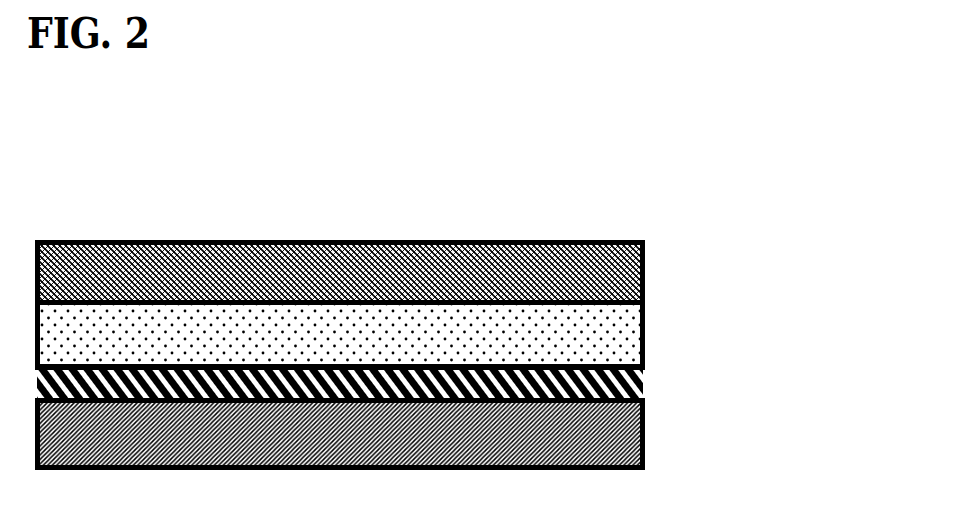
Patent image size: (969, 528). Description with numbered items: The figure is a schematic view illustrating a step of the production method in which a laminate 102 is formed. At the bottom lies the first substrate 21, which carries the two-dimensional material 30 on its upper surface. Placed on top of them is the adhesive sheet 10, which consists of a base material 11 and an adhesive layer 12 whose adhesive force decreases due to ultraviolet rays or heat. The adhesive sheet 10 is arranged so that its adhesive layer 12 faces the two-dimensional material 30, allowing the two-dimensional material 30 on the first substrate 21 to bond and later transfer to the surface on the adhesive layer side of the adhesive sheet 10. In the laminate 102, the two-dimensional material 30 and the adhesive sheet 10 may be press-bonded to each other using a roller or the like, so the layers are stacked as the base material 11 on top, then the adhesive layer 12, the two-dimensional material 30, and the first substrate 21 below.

The laminate 102 is at (497, 224).
The adhesive sheet 10 is at (822, 262).
The base material 11 is at (648, 276).
The adhesive layer 12 is at (648, 329).
The two-dimensional material 30 is at (648, 381).
The first substrate 21 is at (648, 444).